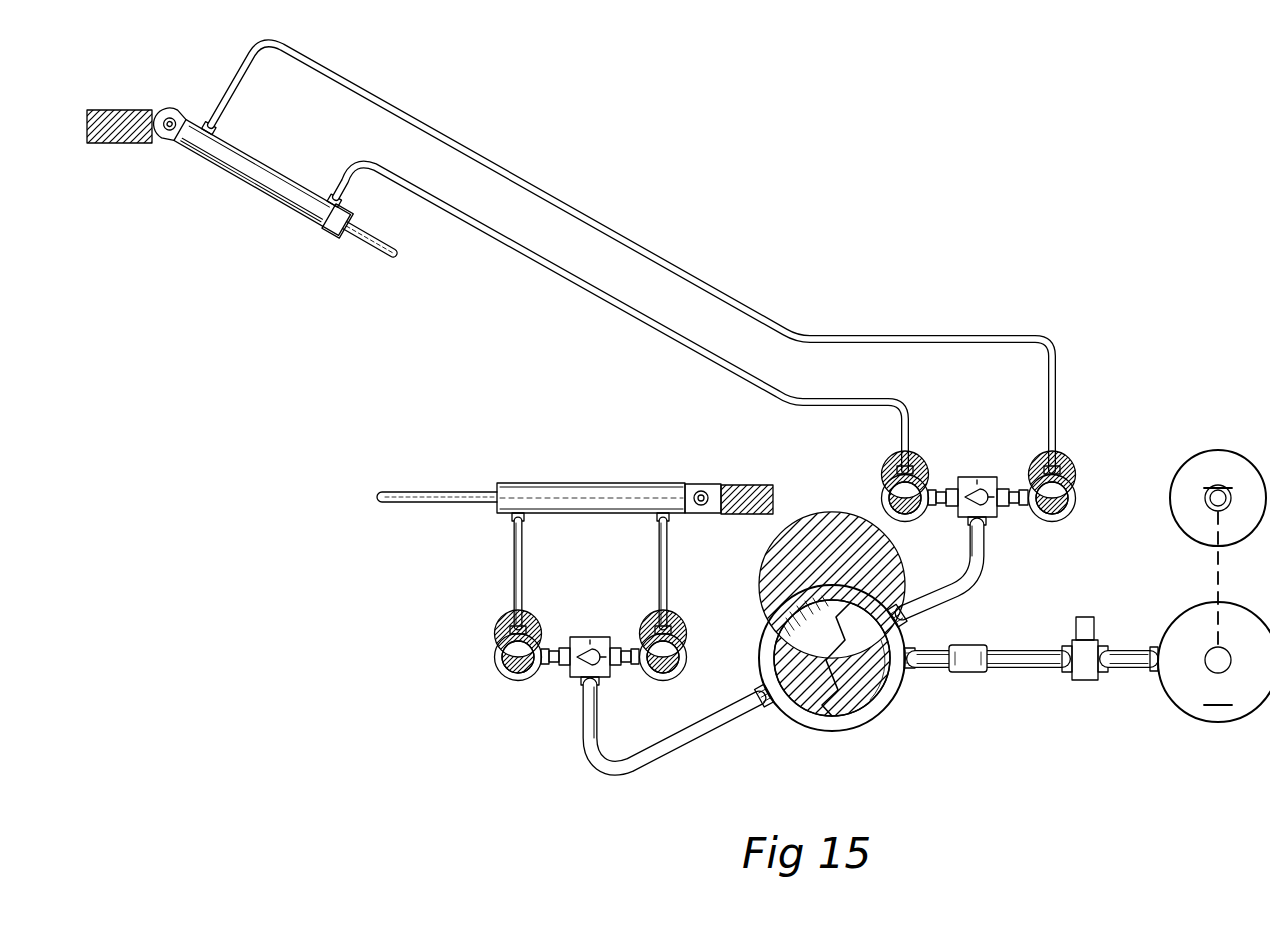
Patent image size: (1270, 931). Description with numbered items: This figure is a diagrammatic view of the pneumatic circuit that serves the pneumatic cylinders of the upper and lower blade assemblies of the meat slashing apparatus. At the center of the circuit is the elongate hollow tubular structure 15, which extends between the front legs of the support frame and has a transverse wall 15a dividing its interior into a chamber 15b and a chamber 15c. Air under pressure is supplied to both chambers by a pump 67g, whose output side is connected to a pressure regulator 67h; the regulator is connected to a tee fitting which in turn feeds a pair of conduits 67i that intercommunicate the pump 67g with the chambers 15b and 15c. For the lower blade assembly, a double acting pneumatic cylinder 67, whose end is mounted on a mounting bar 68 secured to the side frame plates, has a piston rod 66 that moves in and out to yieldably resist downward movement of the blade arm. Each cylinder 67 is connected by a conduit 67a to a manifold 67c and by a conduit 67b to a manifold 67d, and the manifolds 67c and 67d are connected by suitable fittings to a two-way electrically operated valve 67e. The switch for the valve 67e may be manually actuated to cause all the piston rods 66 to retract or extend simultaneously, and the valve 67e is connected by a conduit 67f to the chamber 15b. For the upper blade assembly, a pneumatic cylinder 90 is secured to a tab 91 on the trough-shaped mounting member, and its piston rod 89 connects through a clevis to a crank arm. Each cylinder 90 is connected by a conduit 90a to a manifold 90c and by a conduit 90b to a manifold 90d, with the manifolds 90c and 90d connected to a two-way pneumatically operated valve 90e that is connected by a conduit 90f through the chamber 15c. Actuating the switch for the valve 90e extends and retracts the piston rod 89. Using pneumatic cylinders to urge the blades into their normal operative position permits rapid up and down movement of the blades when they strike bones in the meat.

The hollow tubular structure 15 is at (868, 722).
The transverse wall 15a is at (826, 699).
The chamber 15b is at (873, 682).
The chamber 15c is at (800, 687).
The piston rod 66 is at (395, 505).
The double acting pneumatic cylinder 67 is at (497, 483).
The conduit 67a is at (670, 548).
The conduit 67b is at (512, 548).
The manifold 67c is at (683, 645).
The manifold 67d is at (494, 657).
The two-way electrically operated valve 67e is at (575, 637).
The conduit 67f is at (636, 776).
The pump 67g is at (1210, 723).
The pressure regulator 67h is at (1085, 673).
The conduits 67i is at (963, 652).
The mounting bar 68 is at (742, 486).
The piston rod 89 is at (372, 251).
The pneumatic cylinder 90 is at (230, 176).
The conduit 90a is at (330, 67).
The conduit 90b is at (362, 161).
The manifold 90c is at (883, 490).
The manifold 90d is at (1068, 480).
The two-way pneumatically operated valve 90e is at (977, 477).
The conduit 90f is at (992, 564).
The tab 91 is at (169, 118).